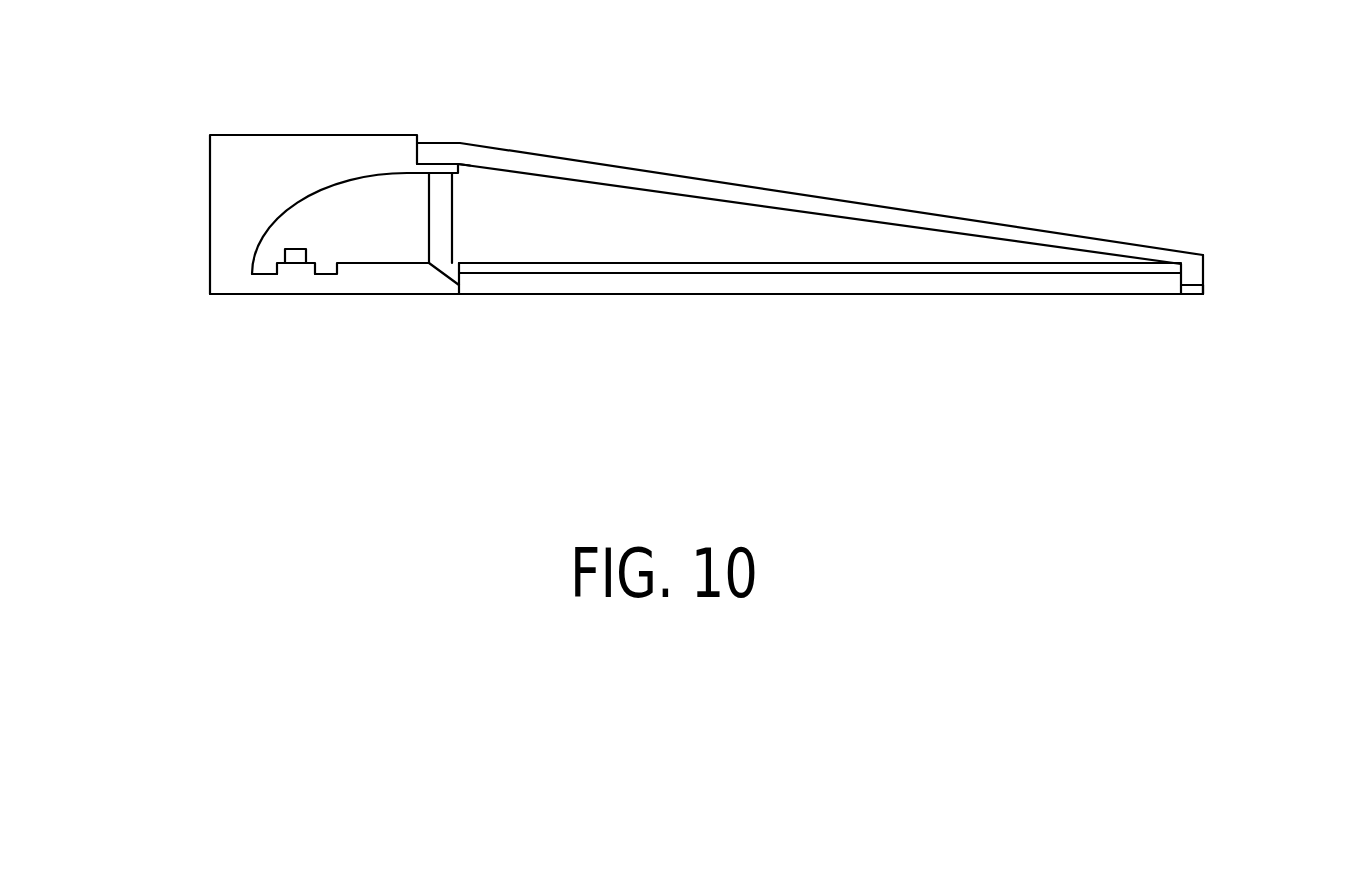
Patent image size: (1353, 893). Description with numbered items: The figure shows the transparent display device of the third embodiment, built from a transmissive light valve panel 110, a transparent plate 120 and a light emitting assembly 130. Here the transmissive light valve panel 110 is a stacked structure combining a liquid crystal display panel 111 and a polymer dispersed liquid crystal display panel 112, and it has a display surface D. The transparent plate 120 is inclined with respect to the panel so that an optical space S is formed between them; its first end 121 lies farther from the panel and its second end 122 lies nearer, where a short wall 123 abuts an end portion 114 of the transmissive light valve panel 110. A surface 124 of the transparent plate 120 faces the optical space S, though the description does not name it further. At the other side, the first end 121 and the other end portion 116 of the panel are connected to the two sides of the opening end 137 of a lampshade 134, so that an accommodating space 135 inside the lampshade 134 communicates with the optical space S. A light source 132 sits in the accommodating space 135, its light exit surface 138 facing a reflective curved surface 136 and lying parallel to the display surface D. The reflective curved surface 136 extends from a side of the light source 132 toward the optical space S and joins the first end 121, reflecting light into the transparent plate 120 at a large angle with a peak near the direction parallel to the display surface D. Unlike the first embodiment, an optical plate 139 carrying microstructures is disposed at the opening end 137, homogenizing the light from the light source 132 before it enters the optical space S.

The transmissive light valve panel 110 is at (1033, 406).
The liquid crystal display panel 111 is at (958, 282).
The polymer dispersed liquid crystal display panel 112 is at (995, 268).
The end portion 114 is at (1171, 284).
The end portion 116 is at (462, 283).
The transparent plate 120 is at (715, 195).
The first end 121 is at (434, 150).
The second end 122 is at (1205, 267).
The short wall 123 is at (1193, 268).
The bottom surface of light guide plate 124 is at (813, 213).
The light emitting assembly 130 is at (178, 210).
The light source 132 is at (290, 278).
The lampshade 134 is at (328, 152).
The accommodating space 135 is at (368, 233).
The reflective curved surface 136 is at (287, 205).
The opening end 137 is at (458, 225).
The light exit surface 138 is at (325, 272).
The optical plate 139 is at (432, 277).
The display surface D is at (637, 295).
The optical space S is at (698, 230).